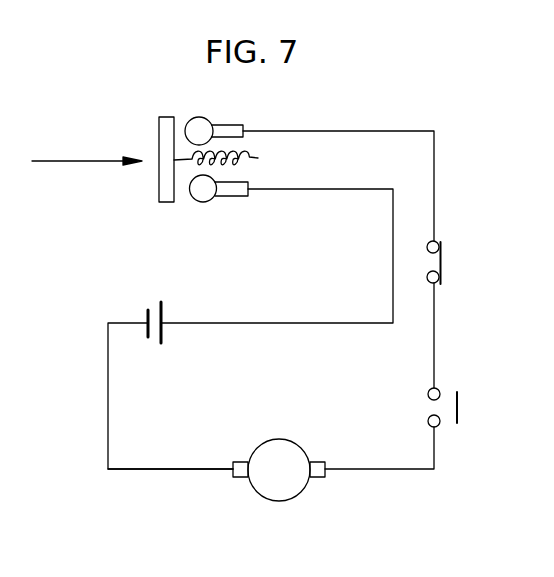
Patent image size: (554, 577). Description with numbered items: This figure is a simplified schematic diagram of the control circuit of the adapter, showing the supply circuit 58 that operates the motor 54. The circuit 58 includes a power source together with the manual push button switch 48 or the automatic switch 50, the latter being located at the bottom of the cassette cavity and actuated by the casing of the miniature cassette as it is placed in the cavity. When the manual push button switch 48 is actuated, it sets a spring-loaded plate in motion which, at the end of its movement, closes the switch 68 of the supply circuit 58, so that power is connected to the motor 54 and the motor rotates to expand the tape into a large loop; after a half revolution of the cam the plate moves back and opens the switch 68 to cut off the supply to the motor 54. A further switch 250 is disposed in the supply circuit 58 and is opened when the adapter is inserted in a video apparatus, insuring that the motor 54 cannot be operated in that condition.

The push button switch 48 is at (159, 132).
The switch 68 is at (230, 124).
The switch 50 is at (447, 263).
The switch 250 is at (459, 407).
The motor 54 is at (282, 500).
The circuit 58 is at (135, 470).